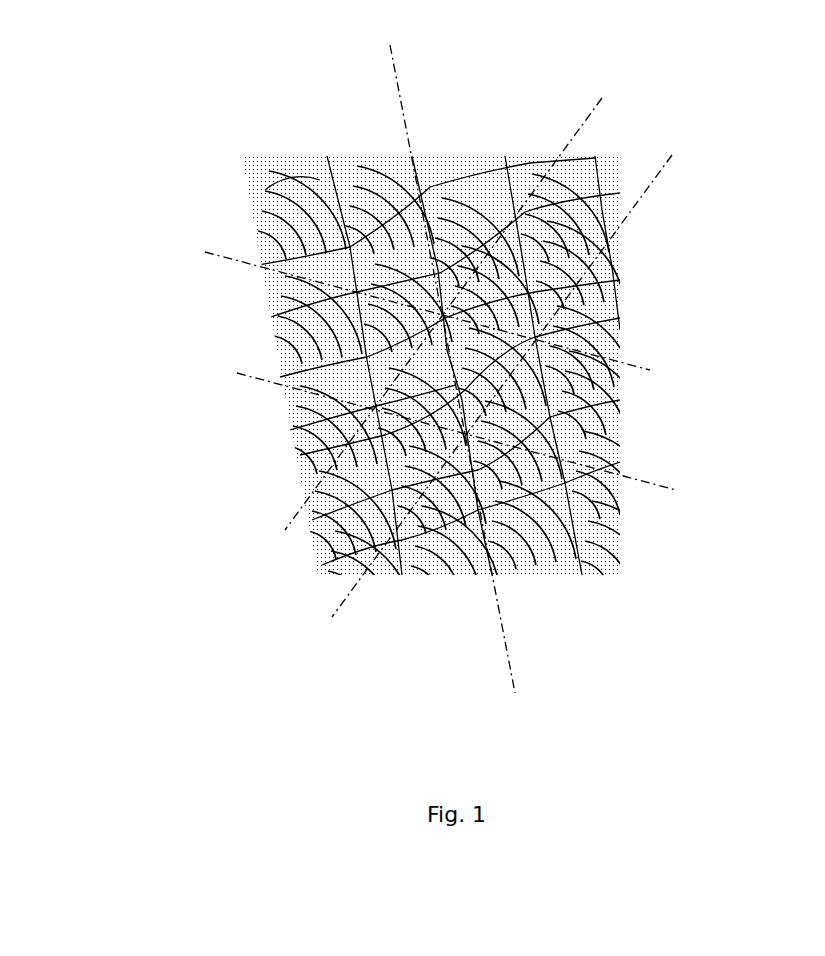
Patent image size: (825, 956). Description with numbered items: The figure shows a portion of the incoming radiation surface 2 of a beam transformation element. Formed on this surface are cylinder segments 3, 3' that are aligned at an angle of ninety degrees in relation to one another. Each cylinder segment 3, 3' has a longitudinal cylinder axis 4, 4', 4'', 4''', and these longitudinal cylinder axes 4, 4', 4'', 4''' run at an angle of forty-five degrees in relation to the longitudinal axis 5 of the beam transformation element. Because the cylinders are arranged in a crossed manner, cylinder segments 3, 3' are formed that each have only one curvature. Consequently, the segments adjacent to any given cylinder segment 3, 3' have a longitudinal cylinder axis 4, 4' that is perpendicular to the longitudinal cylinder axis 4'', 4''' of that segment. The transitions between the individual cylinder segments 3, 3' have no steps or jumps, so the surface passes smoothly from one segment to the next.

The incoming radiation surface 2 is at (276, 206).
The cylinder segment 3 is at (534, 358).
The cylinder segment 3' is at (530, 395).
The longitudinal cylinder axis 4 is at (404, 431).
The longitudinal cylinder axis 4' is at (380, 311).
The longitudinal cylinder axis 4'' is at (443, 290).
The longitudinal cylinder axis 4''' is at (552, 386).
The longitudinal axis 5 is at (503, 633).